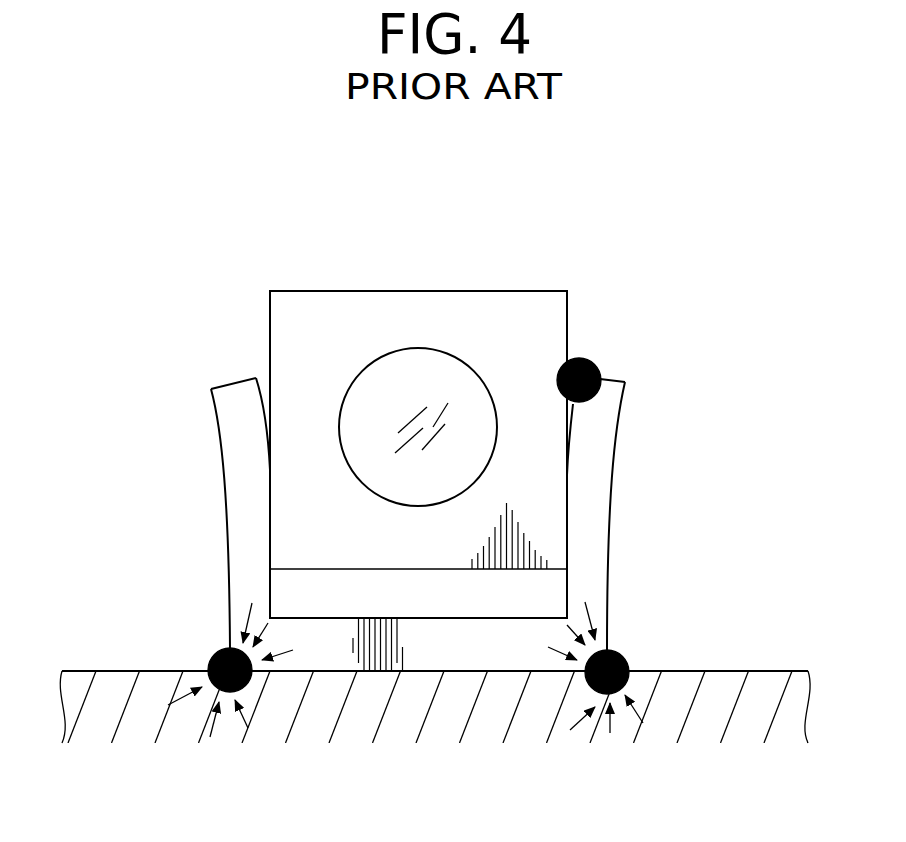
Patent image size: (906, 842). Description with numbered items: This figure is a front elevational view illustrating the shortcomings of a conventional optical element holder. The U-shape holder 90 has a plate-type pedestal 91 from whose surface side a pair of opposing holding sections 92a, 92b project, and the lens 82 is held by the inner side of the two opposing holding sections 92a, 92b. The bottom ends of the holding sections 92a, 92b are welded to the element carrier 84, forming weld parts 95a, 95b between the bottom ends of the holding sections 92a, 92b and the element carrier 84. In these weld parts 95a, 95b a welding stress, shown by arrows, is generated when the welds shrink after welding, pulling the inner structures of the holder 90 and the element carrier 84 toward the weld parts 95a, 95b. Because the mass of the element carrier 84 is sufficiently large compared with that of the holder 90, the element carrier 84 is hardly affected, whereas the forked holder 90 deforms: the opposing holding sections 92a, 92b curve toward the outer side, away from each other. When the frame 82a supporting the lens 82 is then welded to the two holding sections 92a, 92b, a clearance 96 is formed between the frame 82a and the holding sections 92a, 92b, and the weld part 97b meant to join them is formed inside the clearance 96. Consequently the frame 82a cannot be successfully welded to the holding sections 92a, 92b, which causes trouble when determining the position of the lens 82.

The U-shape holder 90 is at (728, 417).
The lens 82 is at (429, 367).
The frame 82a is at (541, 308).
The weld part 97b is at (593, 362).
The holding section 92a is at (240, 417).
The holding section 92b is at (603, 408).
The clearance 96 is at (263, 387).
The weld part 95a is at (208, 662).
The right solder joint 95b is at (632, 657).
The element carrier 84 is at (760, 671).
The pedestal 91 is at (470, 653).